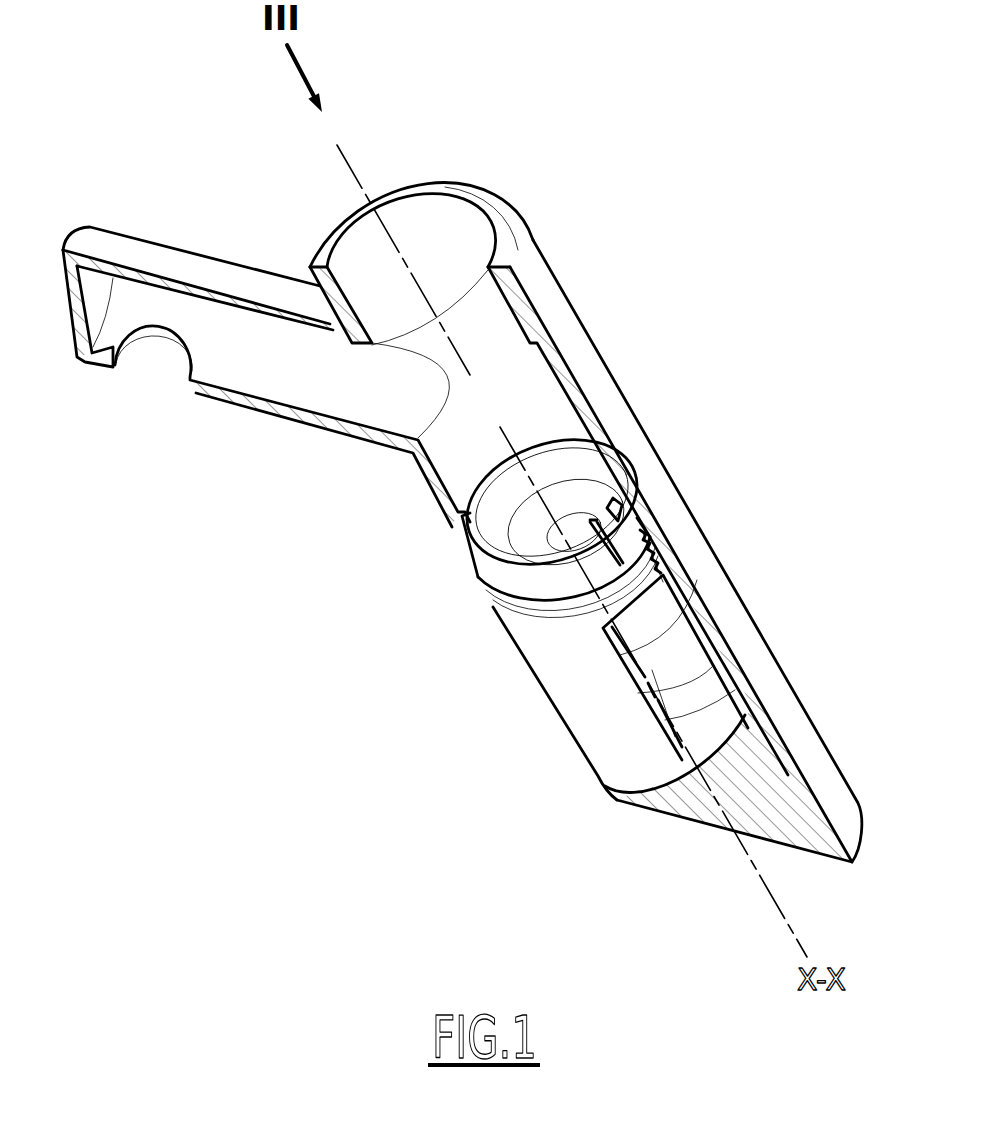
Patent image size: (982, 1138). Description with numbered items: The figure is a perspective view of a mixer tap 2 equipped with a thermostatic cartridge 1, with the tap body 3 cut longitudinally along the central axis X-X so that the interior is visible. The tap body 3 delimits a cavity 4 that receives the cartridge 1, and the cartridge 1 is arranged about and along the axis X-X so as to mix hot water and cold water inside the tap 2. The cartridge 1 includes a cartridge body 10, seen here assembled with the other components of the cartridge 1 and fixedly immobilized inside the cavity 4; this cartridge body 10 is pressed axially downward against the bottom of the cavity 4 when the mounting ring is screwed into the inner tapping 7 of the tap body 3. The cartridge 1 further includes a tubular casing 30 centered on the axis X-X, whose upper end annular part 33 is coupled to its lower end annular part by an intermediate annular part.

The thermostatic cartridge 1 is at (594, 688).
The mixer tap 2 is at (565, 262).
The tap body 3 is at (585, 367).
The cavity 4 is at (572, 551).
The inner tapping 7 is at (653, 580).
The cartridge body 10 is at (583, 755).
The casing 30 is at (455, 550).
The upper end annular part 33 is at (512, 578).